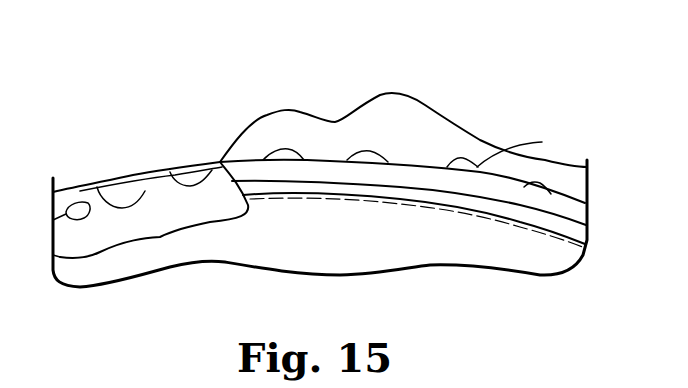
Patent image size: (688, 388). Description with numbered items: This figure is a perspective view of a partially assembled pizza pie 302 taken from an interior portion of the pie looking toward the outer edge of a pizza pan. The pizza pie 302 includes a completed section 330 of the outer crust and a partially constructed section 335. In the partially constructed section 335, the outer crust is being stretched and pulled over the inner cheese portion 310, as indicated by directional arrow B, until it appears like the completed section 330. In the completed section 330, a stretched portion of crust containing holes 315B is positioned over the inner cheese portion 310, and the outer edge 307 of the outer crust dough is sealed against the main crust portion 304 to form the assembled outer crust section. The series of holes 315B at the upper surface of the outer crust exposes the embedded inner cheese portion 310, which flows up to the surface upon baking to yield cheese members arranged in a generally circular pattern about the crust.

The partially assembled pizza pie 302 is at (568, 275).
The main crust portion 304 is at (364, 248).
The outer edge 307 is at (457, 122).
The inner cheese portion 310 is at (271, 200).
The holes 315B is at (133, 173).
The completed section 330 is at (85, 188).
The partially constructed section 335 is at (553, 176).
The directional arrow B is at (267, 140).